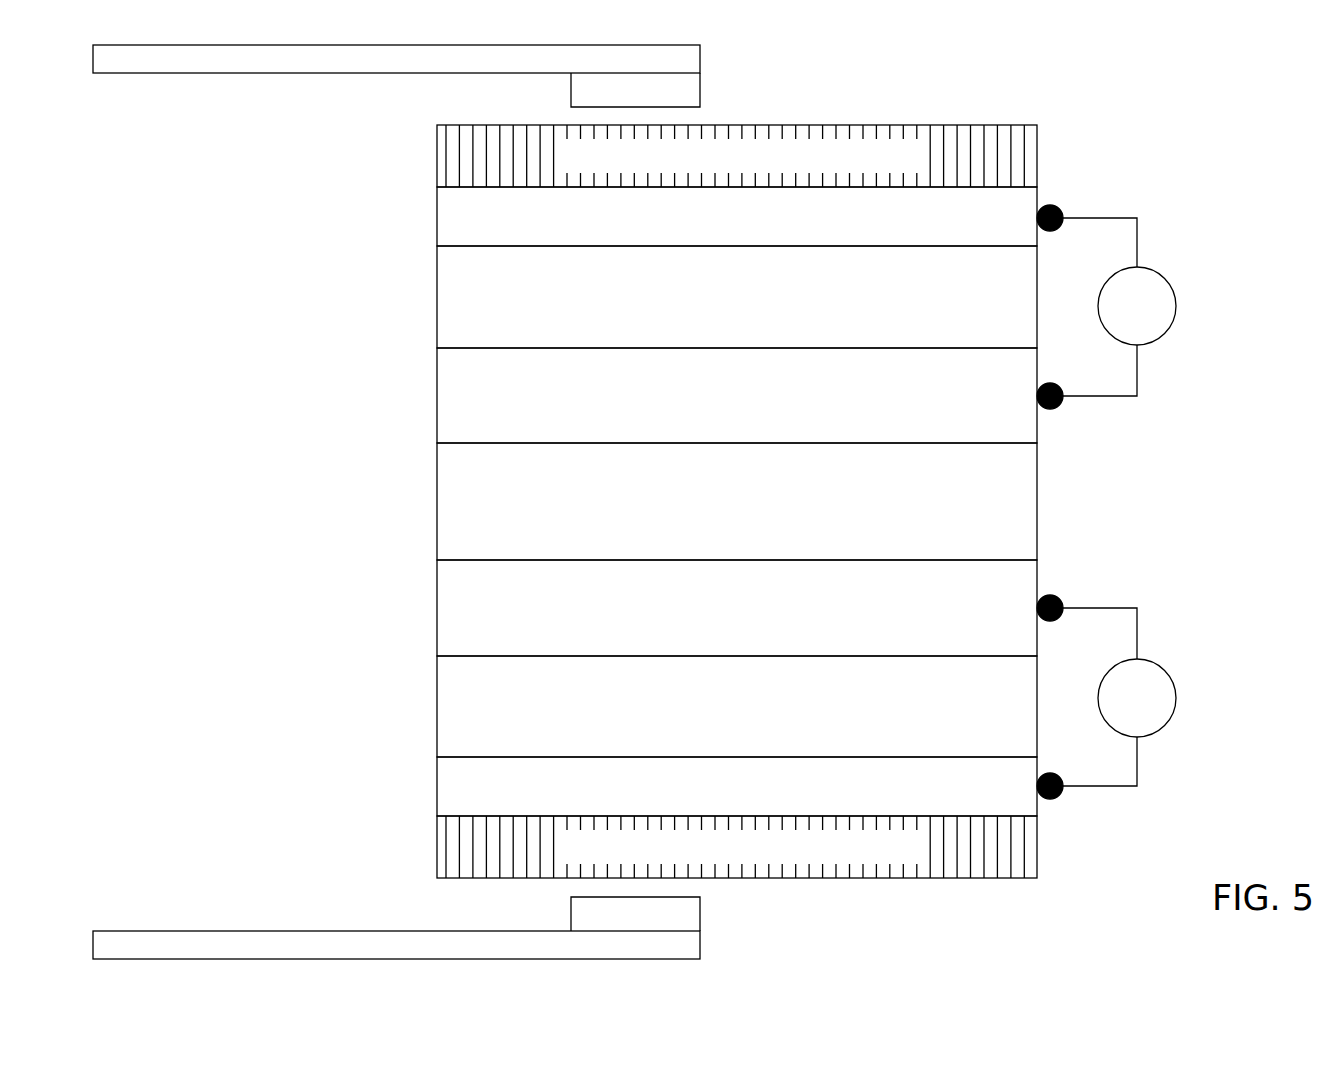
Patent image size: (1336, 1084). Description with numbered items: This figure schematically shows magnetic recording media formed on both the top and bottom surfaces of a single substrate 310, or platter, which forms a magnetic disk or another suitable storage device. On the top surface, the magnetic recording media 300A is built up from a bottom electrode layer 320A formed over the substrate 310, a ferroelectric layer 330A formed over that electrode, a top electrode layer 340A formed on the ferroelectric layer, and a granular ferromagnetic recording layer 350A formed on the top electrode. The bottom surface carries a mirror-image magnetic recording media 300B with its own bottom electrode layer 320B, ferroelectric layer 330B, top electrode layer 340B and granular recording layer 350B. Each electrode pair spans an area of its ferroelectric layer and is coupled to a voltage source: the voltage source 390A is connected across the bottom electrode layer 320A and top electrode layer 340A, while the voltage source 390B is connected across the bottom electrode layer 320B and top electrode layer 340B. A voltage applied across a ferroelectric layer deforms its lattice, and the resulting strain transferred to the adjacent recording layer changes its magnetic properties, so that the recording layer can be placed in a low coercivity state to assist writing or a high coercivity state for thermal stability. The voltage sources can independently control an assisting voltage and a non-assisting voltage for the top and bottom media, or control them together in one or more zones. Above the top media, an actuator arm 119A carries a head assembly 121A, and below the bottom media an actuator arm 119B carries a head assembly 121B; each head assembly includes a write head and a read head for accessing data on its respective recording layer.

The actuator arm 119A is at (700, 62).
The head assembly 121A is at (700, 92).
The actuator arm 119B is at (700, 945).
The head assembly 121B is at (700, 912).
The magnetic recording media 300A is at (246, 416).
The magnetic recording media 300B is at (246, 588).
The substrate 310 is at (437, 503).
The bottom electrode layer 320A is at (437, 398).
The bottom electrode layer 320B is at (437, 612).
The ferroelectric layer 330A is at (437, 300).
The ferroelectric layer 330B is at (437, 708).
The top electrode layer 340A is at (437, 220).
The top electrode layer 340B is at (437, 790).
The recording layer 350A is at (437, 150).
The recording layer 350B is at (437, 838).
The voltage source 390A is at (1176, 305).
The voltage source 390B is at (1176, 697).